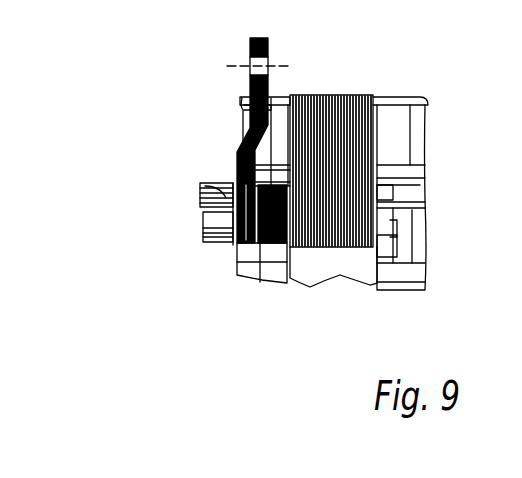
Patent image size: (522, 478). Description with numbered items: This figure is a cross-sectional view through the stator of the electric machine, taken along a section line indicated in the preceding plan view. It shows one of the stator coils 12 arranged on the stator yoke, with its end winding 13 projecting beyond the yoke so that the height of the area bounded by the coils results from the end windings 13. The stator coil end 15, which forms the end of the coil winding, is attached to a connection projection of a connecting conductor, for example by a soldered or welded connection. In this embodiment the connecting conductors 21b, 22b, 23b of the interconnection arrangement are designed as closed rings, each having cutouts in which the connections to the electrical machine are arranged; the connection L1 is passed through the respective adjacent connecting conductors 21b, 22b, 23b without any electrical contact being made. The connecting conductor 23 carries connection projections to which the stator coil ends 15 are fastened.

The stator coil 12 is at (320, 98).
The end winding 13 is at (372, 104).
The stator coil end 15 is at (212, 185).
The connecting conductor 21b is at (236, 158).
The connecting conductor 22b is at (230, 183).
The connecting conductor 23 is at (203, 208).
The connecting conductor 23b is at (227, 247).
The connection L1 is at (250, 52).